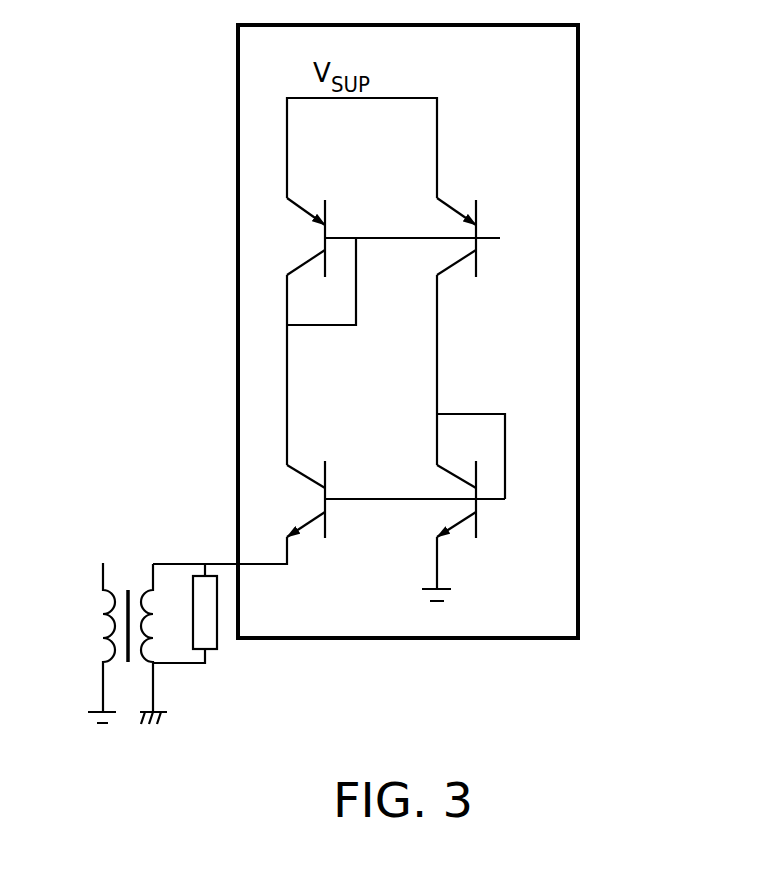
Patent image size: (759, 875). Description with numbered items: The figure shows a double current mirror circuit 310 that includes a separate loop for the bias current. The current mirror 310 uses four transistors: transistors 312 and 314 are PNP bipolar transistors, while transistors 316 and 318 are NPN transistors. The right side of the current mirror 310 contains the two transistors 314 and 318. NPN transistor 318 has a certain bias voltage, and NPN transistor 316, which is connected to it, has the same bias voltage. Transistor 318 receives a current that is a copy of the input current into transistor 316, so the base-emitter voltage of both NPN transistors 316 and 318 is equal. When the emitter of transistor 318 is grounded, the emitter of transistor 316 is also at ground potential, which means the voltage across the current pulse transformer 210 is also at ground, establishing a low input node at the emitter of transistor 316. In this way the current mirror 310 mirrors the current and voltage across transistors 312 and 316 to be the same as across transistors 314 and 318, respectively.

The double current mirror circuit 310 is at (578, 97).
The PNP bipolar transistor 312 is at (303, 237).
The PNP bipolar transistor 314 is at (488, 255).
The NPN transistor 316 is at (310, 500).
The NPN transistor 318 is at (493, 515).
The current pulse transformer 210 is at (128, 568).